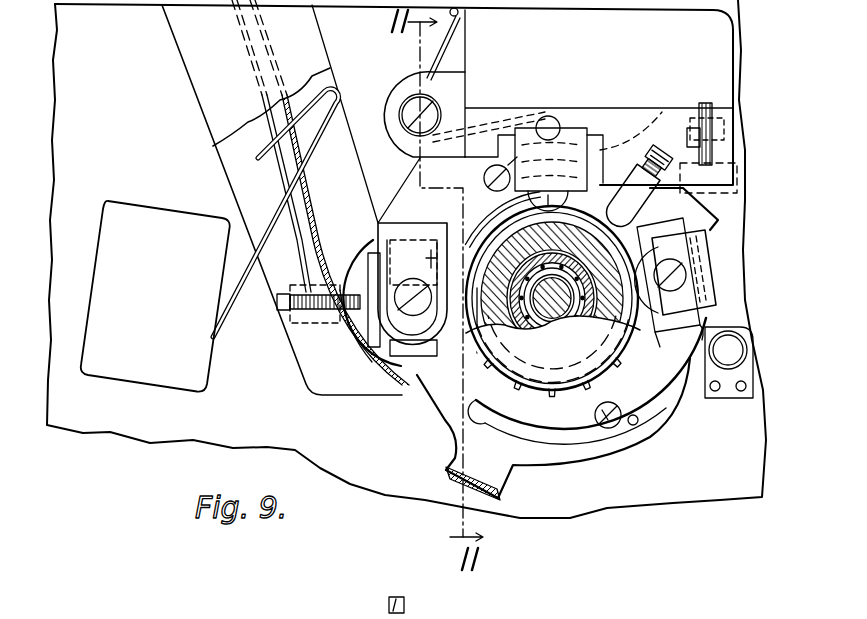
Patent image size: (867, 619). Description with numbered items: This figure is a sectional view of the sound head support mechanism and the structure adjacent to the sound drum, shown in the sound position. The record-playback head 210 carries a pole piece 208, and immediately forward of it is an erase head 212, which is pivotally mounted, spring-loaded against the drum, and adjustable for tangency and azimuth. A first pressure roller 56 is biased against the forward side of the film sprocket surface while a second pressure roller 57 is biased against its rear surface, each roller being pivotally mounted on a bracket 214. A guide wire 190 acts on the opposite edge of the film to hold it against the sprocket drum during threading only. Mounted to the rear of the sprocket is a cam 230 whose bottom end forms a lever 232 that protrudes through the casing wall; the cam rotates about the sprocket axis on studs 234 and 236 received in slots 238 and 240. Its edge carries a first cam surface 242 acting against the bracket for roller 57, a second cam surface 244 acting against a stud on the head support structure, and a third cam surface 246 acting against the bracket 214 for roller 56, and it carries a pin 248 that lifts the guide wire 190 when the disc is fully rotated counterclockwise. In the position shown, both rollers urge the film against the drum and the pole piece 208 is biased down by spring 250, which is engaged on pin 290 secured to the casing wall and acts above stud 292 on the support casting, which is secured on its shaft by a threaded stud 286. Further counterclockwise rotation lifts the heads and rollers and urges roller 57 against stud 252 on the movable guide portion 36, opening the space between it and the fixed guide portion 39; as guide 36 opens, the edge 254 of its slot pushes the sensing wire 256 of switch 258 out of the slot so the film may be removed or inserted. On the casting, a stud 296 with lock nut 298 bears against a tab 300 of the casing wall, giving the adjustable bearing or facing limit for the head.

The movable portion of the output film guide 36 is at (326, 395).
The fixed guide portion 39 is at (322, 210).
The first pressure roller 56 is at (660, 347).
The second pressure roller 57 is at (372, 375).
The guide wire 190 is at (737, 334).
The pole piece 208 is at (552, 294).
The record-playback head 210 is at (572, 128).
The erase head 212 is at (637, 198).
The bracket 214 is at (372, 226).
The cam 230 is at (443, 418).
The lever 232 is at (446, 480).
The stud 234 is at (608, 430).
The stud 236 is at (484, 180).
The slot 238 is at (571, 432).
The slot 240 is at (598, 175).
The first cam surface 242 is at (366, 114).
The second cam surface 244 is at (660, 113).
The third cam surface 246 is at (722, 305).
The pin 248 is at (636, 424).
The spring 250 is at (428, 72).
The stud 252 is at (388, 325).
The edge of the slot 254 is at (314, 286).
The sensing wire 256 is at (270, 232).
The switch 258 is at (146, 230).
The threaded stud 286 is at (400, 108).
The pin 290 is at (463, 22).
The stud 292 is at (546, 116).
The stud 296 is at (738, 124).
The lock nut 298 is at (737, 84).
The tab 300 is at (748, 180).